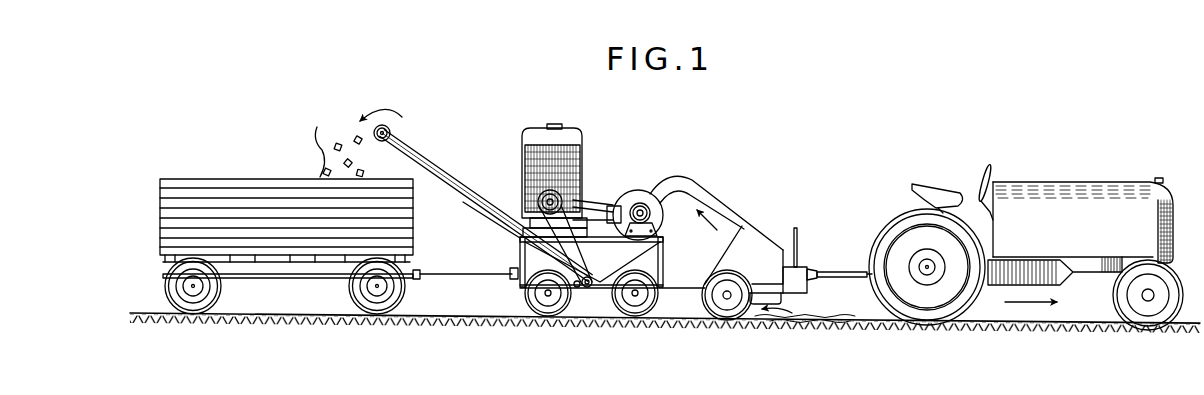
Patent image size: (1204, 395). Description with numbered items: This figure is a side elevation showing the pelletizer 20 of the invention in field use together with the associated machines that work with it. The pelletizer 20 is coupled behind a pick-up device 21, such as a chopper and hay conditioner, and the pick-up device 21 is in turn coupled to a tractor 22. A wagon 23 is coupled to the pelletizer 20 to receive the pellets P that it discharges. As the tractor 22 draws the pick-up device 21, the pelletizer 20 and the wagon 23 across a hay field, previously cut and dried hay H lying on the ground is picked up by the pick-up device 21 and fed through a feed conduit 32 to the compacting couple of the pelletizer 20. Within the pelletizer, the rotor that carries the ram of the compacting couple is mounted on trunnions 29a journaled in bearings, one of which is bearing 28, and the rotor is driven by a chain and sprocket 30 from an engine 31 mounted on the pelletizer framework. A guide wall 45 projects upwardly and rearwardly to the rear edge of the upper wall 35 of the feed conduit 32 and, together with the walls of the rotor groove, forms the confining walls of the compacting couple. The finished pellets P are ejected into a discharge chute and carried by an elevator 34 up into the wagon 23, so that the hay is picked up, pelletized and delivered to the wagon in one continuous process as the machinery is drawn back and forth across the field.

The pelletizer 20 is at (740, 215).
The pick-up device 21 is at (760, 233).
The tractor 22 is at (1075, 183).
The wagon 23 is at (213, 178).
The bearing 28 is at (662, 228).
The trunnions 29a is at (640, 207).
The chain and sprocket 30 is at (580, 197).
The engine 31 is at (523, 130).
The feed conduit 32 is at (722, 212).
The elevator 34 is at (440, 160).
The upper wall of the feed conduit 35 is at (710, 192).
The guide wall 45 is at (633, 203).
The pellets P is at (354, 142).
The hay H is at (1063, 322).